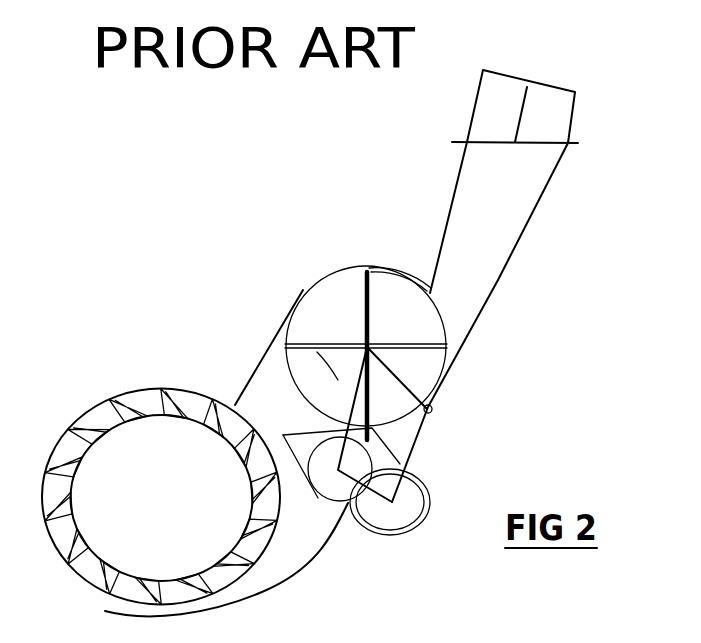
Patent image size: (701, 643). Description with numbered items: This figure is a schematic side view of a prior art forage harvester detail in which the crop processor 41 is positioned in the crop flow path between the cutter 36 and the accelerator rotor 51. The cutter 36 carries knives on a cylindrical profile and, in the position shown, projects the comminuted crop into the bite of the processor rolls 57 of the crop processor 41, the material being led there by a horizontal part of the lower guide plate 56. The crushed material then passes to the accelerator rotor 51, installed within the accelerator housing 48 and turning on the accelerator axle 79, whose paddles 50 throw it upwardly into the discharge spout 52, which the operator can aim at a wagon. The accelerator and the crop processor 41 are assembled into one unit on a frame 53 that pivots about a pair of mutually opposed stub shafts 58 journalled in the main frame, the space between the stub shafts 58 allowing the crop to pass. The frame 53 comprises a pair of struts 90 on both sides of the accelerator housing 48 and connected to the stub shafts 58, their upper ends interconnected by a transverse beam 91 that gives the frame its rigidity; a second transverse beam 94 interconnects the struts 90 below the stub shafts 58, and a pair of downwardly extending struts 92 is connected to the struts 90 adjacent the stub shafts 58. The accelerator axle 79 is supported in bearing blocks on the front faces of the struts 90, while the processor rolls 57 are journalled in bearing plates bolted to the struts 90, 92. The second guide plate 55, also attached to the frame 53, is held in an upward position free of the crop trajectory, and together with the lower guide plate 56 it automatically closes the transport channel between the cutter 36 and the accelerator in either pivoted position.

The cutter 36 is at (128, 430).
The crop processor 41 is at (352, 540).
The accelerator housing 48 is at (447, 330).
The paddles 50 is at (389, 272).
The accelerator rotor 51 is at (435, 358).
The discharge spout 52 is at (537, 183).
The frame 53 is at (352, 343).
The second guide plate 55 is at (298, 437).
The lower guide plate 56 is at (428, 520).
The processor rolls 57 is at (355, 517).
The stub shafts 58 is at (448, 420).
The accelerator axle 79 is at (364, 330).
The struts 90 is at (445, 377).
The transverse beam 91 is at (283, 335).
The downwardly extending struts 92 is at (408, 462).
The second transverse beam 94 is at (312, 500).